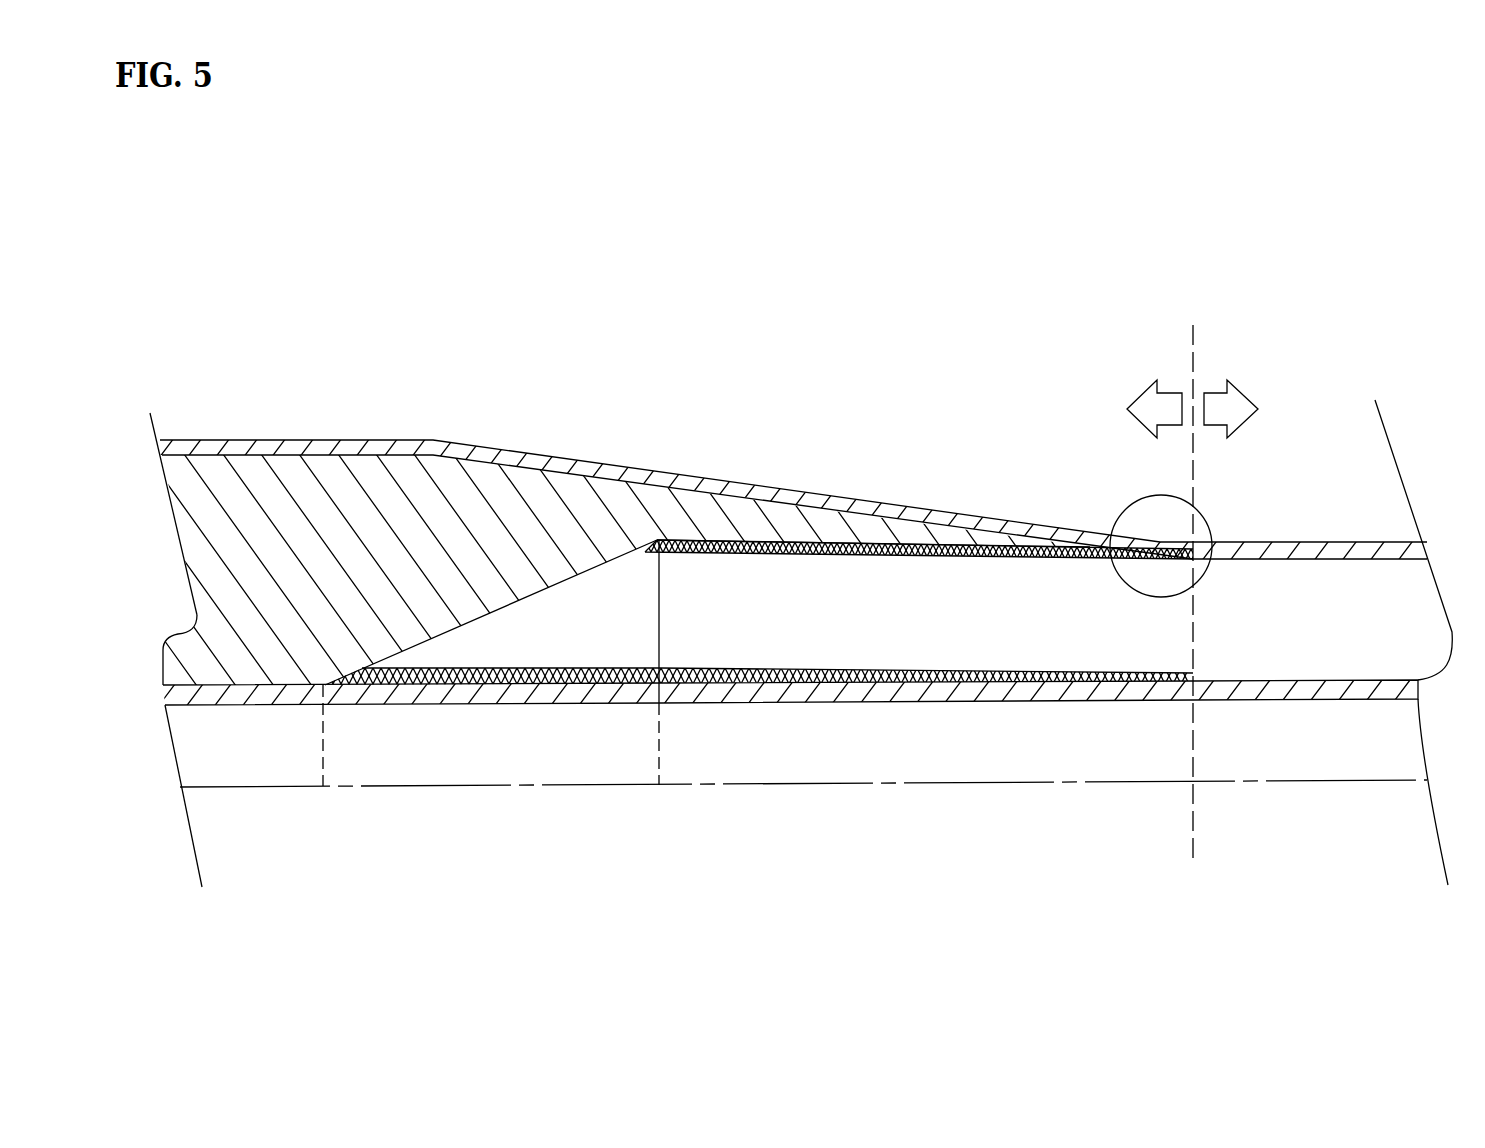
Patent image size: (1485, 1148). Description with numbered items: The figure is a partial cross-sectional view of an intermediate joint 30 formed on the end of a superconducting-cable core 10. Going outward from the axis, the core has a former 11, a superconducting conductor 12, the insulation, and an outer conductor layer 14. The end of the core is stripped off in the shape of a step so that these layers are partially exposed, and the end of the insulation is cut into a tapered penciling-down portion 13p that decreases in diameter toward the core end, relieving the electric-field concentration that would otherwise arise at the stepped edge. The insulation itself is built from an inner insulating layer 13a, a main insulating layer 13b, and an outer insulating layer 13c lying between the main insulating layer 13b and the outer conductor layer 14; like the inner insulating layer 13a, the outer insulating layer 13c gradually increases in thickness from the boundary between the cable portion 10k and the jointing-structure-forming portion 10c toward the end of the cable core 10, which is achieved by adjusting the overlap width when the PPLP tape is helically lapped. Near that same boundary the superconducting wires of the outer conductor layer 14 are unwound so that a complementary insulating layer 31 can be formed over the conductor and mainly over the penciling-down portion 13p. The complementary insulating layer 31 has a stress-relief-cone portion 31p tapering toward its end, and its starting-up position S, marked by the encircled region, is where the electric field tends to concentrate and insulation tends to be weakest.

The superconducting-cable core 10 is at (801, 591).
The jointing-structure-forming portion 10c is at (1119, 391).
The cable portion 10k is at (1275, 391).
The former 11 is at (843, 757).
The superconducting conductor 12 is at (1028, 702).
The inner insulating layer 13a is at (510, 667).
The main insulating layer 13b is at (933, 580).
The outer insulating layer 13c is at (785, 547).
The penciling-down portion 13p is at (590, 635).
The outer conductor layer 14 is at (418, 440).
The intermediate joint 30 is at (552, 425).
The complementary insulating layer 31 is at (298, 478).
The stress-relief-cone portion 31p is at (563, 500).
The starting-up position S is at (1198, 583).